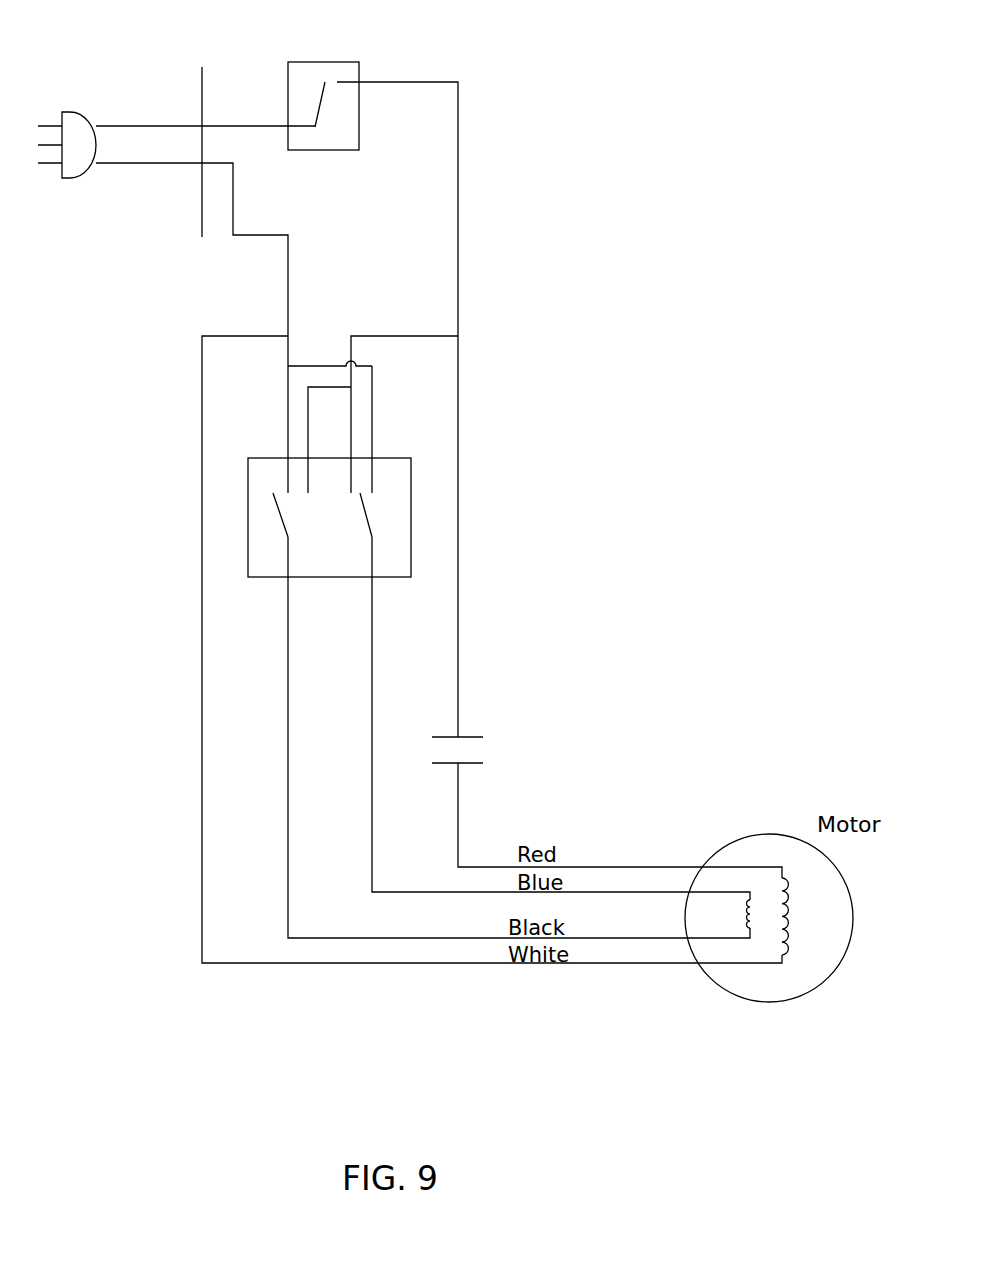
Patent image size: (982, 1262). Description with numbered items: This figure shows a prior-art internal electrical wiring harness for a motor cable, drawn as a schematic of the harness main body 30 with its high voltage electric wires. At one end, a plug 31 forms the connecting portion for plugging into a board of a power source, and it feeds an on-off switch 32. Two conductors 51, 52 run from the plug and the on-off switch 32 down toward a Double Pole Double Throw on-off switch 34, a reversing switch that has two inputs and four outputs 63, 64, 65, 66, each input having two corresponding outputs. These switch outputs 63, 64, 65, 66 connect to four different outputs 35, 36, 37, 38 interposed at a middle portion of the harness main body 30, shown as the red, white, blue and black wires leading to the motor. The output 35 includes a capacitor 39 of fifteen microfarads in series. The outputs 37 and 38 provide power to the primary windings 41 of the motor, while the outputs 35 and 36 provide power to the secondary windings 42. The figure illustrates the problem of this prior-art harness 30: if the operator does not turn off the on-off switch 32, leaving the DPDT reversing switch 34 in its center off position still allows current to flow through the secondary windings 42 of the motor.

The harness main body 30 is at (589, 400).
The plug 31 is at (78, 124).
The on-off switch 32 is at (322, 62).
The DPDT on-off switch 34 is at (411, 488).
The output 35 is at (613, 866).
The output 36 is at (353, 963).
The output 37 is at (652, 891).
The output 38 is at (300, 941).
The capacitor 39 is at (468, 737).
The primary windings 41 is at (747, 912).
The secondary windings 42 is at (788, 913).
The first conductor 51 is at (460, 195).
The second conductor 52 is at (289, 273).
The output 63 is at (372, 378).
The output 64 is at (351, 445).
The output 65 is at (287, 398).
The output 66 is at (308, 432).